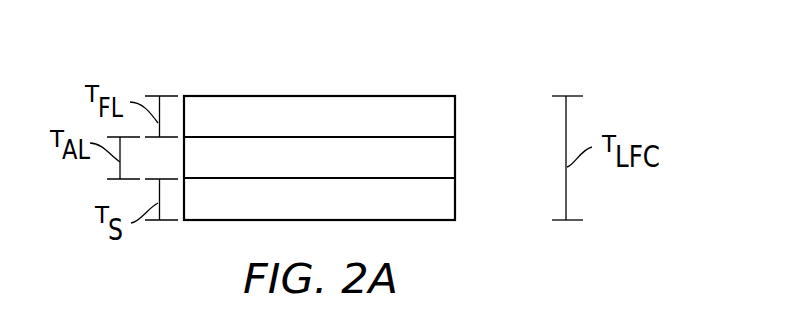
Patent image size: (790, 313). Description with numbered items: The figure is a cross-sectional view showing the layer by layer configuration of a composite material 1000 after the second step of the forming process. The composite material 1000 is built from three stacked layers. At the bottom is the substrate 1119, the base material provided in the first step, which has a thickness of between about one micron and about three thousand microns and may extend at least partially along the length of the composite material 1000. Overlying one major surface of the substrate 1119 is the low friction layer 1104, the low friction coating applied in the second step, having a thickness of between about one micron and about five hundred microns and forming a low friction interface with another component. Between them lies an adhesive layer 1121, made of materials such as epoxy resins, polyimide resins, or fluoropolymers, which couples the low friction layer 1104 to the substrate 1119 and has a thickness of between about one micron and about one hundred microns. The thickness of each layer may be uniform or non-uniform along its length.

The composite material 1000 is at (594, 65).
The low friction layer 1104 is at (457, 121).
The adhesive layer 1121 is at (457, 163).
The substrate 1119 is at (457, 202).